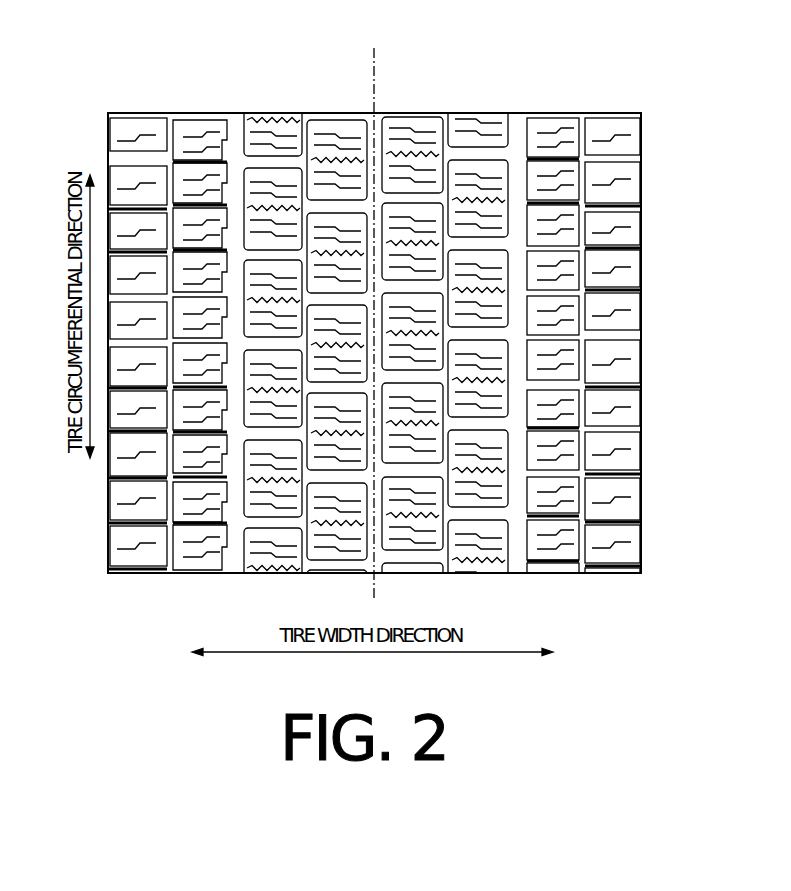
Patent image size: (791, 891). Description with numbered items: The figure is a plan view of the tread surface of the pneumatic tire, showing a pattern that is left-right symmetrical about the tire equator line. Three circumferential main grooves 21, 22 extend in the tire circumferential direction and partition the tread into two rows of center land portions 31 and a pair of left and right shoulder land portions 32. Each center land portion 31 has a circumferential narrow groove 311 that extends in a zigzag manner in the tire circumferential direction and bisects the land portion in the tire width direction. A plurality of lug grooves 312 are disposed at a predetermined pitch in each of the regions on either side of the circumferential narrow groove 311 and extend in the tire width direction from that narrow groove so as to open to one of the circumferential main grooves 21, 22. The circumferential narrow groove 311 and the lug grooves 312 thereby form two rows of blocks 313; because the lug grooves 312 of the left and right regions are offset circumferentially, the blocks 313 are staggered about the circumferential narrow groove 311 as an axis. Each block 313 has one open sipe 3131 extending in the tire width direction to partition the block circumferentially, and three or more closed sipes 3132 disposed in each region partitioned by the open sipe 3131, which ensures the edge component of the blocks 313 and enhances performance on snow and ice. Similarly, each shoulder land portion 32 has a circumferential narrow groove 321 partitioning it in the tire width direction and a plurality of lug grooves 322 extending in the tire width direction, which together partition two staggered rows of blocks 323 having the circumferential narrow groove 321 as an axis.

The circumferential main groove 21 is at (378, 115).
The circumferential main groove 22 is at (235, 133).
The center land portion 31 is at (270, 55).
The circumferential narrow groove 311 is at (310, 124).
The lug groove 312 is at (258, 163).
The block 313 is at (270, 183).
The open sipe 3131 is at (350, 145).
The closed sipe 3132 is at (322, 148).
The shoulder land portion 32 is at (166, 52).
The circumferential narrow groove 321 is at (172, 135).
The lug groove 322 is at (221, 138).
The block 323 is at (187, 133).